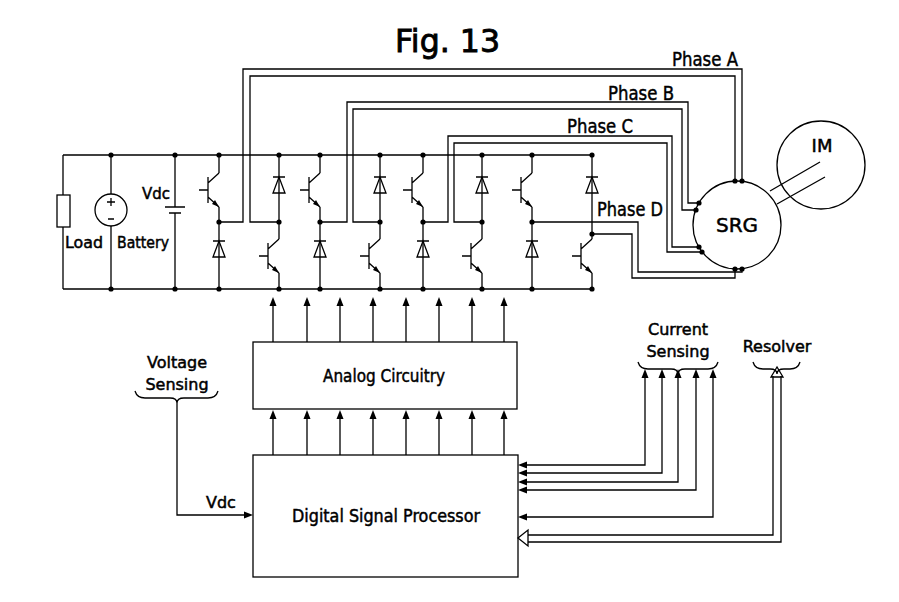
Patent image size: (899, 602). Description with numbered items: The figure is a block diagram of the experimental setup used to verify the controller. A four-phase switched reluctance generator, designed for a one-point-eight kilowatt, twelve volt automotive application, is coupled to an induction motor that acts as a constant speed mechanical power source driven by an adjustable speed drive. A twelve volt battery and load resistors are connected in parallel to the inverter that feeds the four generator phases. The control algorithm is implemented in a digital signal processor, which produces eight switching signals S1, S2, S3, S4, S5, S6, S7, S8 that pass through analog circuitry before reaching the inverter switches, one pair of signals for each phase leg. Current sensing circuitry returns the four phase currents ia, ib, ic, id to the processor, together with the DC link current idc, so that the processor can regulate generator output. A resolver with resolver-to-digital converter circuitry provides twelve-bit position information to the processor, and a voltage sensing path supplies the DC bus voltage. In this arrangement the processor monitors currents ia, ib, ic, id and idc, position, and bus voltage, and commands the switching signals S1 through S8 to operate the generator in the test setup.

The switching signal S1 is at (263, 376).
The switching signal S2 is at (297, 376).
The switching signal S3 is at (330, 376).
The switching signal S4 is at (363, 376).
The switching signal S5 is at (396, 376).
The switching signal S6 is at (429, 376).
The switching signal S7 is at (462, 376).
The switching signal S8 is at (494, 376).
The phase A current sense signal ia is at (583, 419).
The phase B current sense signal ib is at (592, 423).
The phase C current sense signal ic is at (600, 427).
The phase D current sense signal id is at (609, 431).
The DC link current sense signal idc is at (617, 445).